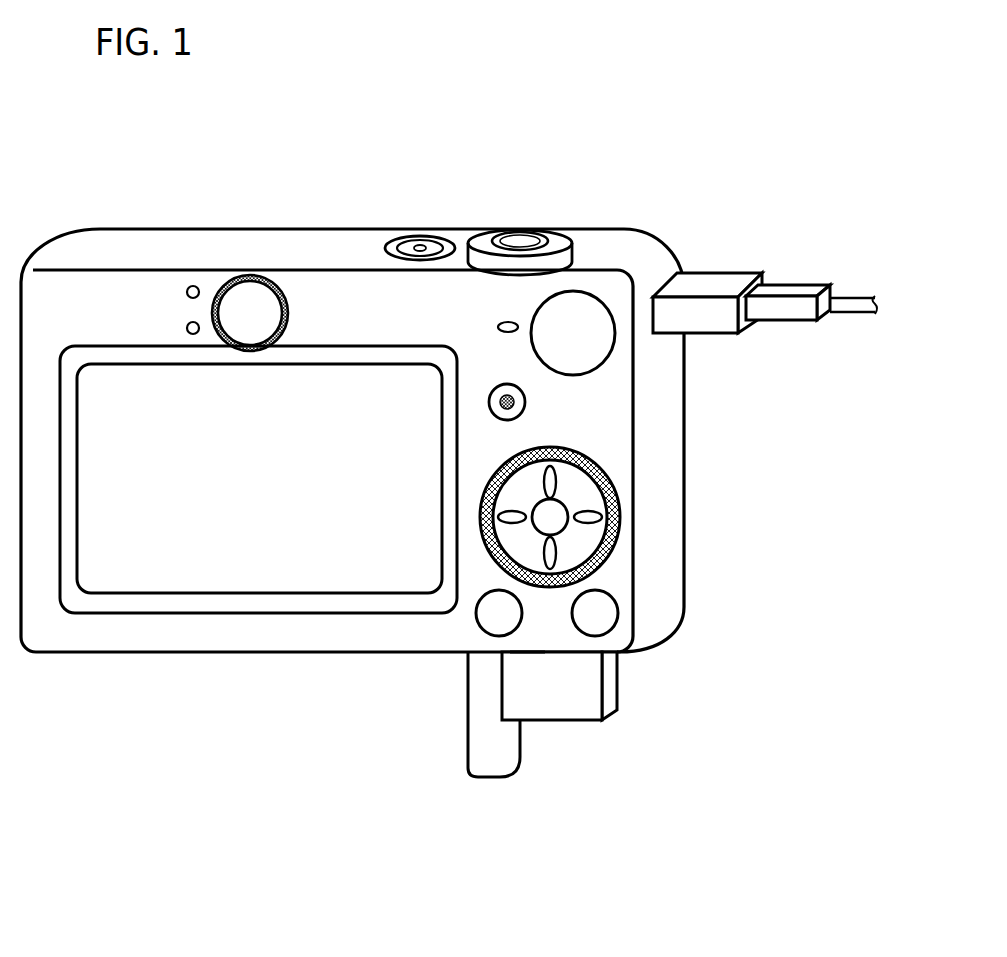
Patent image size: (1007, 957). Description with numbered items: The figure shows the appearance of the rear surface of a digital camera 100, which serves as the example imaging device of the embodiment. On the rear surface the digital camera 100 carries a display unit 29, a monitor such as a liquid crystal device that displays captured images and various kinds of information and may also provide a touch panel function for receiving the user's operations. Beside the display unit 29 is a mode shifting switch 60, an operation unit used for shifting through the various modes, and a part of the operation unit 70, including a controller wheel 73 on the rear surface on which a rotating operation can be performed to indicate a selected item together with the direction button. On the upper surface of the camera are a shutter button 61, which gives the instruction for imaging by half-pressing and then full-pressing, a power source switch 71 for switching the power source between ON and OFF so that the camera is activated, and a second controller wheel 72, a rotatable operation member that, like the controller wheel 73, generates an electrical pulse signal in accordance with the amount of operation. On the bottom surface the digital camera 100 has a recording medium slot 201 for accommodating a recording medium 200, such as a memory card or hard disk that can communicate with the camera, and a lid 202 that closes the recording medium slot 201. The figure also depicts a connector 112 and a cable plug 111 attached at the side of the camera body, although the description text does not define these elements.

The digital camera 100 is at (150, 690).
The display unit 29 is at (177, 405).
The mode shifting switch 60 is at (584, 306).
The operation unit 70 is at (584, 357).
The power source switch 71 is at (422, 241).
The controller wheel 72 is at (484, 243).
The shutter button 61 is at (536, 235).
The controller wheel 73 is at (489, 466).
The connector 112 is at (667, 280).
The cable plug 111 is at (789, 290).
The recording medium 200 is at (572, 692).
The recording medium slot 201 is at (527, 655).
The lid 202 is at (522, 757).